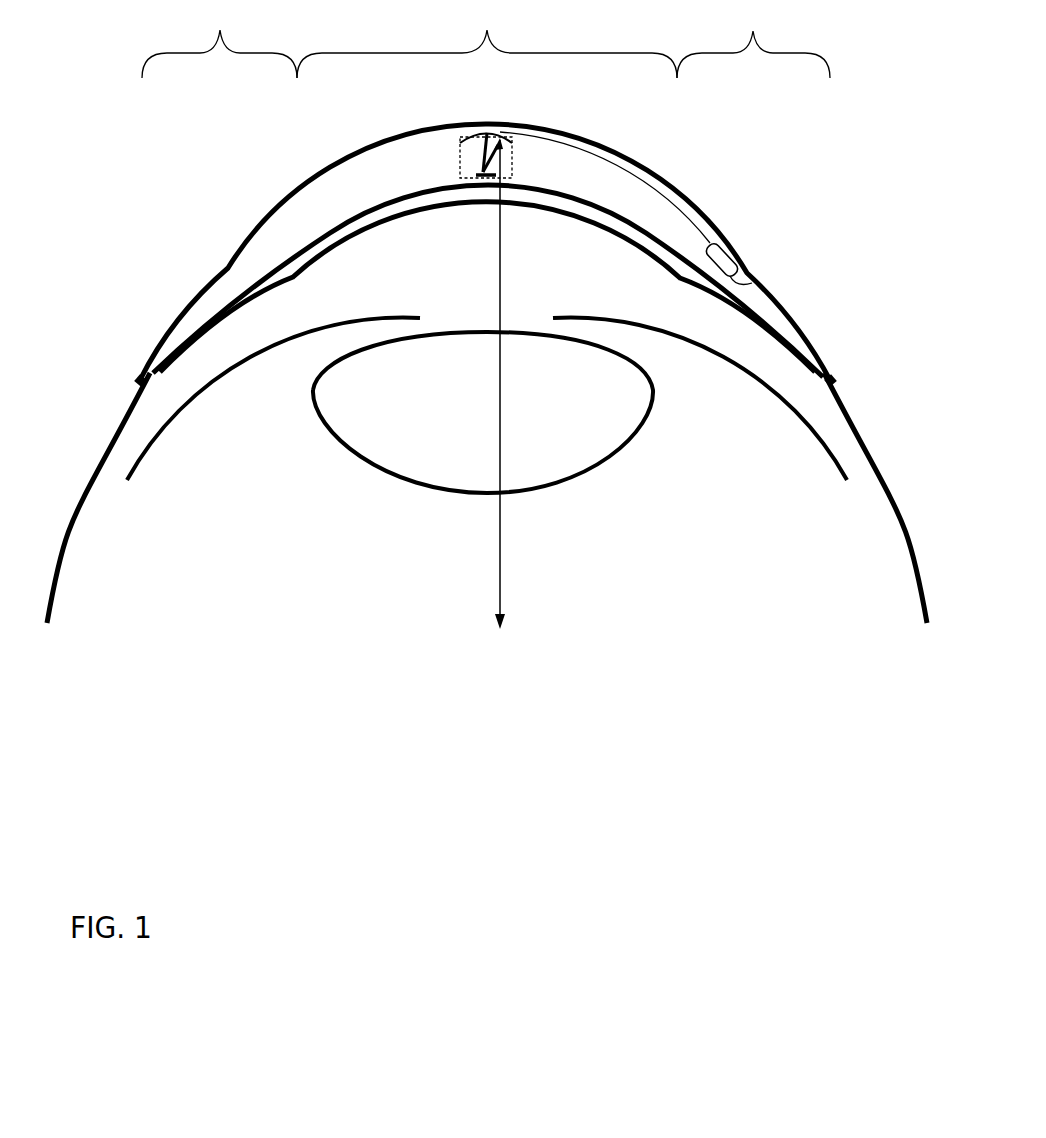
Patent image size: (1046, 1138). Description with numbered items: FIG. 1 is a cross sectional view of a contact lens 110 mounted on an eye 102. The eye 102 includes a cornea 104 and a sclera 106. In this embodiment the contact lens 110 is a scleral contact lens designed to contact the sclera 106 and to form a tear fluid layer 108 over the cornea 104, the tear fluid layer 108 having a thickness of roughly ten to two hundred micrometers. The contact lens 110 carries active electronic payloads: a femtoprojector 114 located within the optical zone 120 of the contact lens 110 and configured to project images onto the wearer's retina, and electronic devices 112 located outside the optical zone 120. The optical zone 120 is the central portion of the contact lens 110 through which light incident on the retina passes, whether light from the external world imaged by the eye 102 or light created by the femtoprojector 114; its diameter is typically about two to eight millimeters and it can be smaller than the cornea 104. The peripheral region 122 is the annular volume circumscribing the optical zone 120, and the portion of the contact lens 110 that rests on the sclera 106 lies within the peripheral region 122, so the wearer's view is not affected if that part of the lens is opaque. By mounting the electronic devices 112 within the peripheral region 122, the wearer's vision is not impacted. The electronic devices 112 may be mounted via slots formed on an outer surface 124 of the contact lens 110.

The eye 102 is at (487, 401).
The cornea 104 is at (403, 215).
The sclera 106 is at (147, 362).
The tear fluid layer 108 is at (607, 219).
The contact lens 110 is at (536, 250).
The electronic devices 112 is at (725, 257).
The femtoprojector 114 is at (513, 150).
The optical zone 120 is at (487, 40).
The peripheral region 122 is at (493, 40).
The outer surface 124 is at (773, 298).